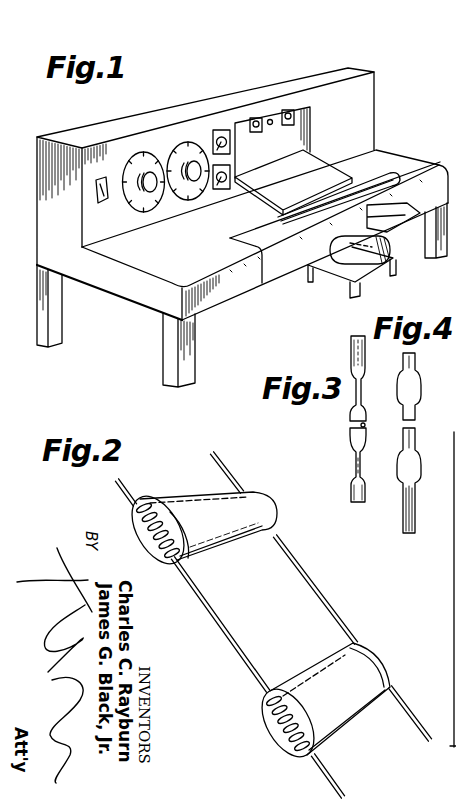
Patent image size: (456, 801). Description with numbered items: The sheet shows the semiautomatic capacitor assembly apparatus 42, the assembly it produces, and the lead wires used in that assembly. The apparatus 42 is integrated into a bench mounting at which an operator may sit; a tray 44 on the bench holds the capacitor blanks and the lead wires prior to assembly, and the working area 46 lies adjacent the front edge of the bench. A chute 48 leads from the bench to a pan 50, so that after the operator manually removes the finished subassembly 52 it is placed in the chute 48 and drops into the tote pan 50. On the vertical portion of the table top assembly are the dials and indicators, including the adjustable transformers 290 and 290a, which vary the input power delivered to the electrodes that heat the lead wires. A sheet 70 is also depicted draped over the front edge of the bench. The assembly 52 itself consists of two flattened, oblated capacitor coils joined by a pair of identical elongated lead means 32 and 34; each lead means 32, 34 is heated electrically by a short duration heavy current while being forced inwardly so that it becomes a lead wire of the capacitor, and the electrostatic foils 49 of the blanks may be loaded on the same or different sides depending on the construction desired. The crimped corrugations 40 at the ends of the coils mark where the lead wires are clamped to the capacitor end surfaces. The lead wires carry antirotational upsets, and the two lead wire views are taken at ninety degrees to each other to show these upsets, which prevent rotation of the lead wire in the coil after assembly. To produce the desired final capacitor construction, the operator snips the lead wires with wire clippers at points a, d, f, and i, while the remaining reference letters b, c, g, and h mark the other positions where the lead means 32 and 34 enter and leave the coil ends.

In FIG. 1, the apparatus 42 is at (136, 314).
In FIG. 1, the adjustable transformer 290a is at (130, 151).
In FIG. 1, the adjustable transformer 290 is at (179, 140).
In FIG. 1, the tray 44 is at (288, 189).
In FIG. 1, the working area 46 is at (376, 178).
In FIG. 1, the chute 48 is at (418, 218).
In FIG. 1, the sheet 70 is at (290, 258).
In FIG. 1, the pan 50 is at (353, 256).
In FIG. 2, the lead means 32 is at (219, 628).
In FIG. 3, the lead means 32 is at (364, 492).
In FIG. 4, the lead means 32 is at (413, 520).
In FIG. 2, the lead means 34 is at (312, 583).
In FIG. 2, the crimped serrations 40 is at (146, 535).
In FIG. 2, the electrostatic foils 49 is at (239, 626).
In FIG. 2, the assembly 52 is at (239, 596).
In FIG. 2, the snipping point a is at (146, 482).
In FIG. 2, the point b is at (254, 480).
In FIG. 2, the point c is at (185, 558).
In FIG. 2, the snipping point d is at (281, 531).
In FIG. 2, the snipping point f is at (272, 687).
In FIG. 2, the point g is at (357, 641).
In FIG. 2, the point h is at (318, 750).
In FIG. 2, the snipping point i is at (393, 687).